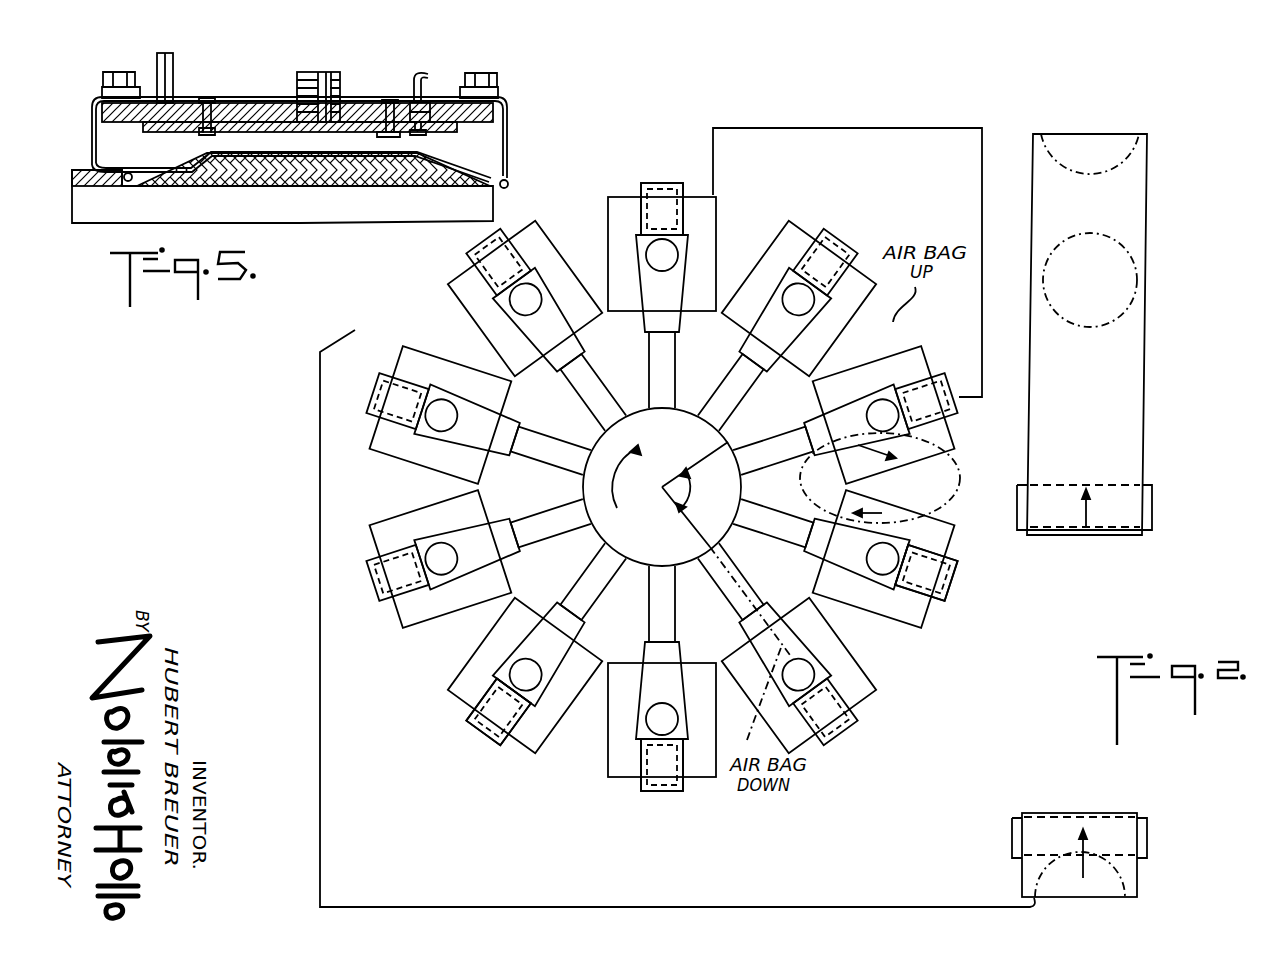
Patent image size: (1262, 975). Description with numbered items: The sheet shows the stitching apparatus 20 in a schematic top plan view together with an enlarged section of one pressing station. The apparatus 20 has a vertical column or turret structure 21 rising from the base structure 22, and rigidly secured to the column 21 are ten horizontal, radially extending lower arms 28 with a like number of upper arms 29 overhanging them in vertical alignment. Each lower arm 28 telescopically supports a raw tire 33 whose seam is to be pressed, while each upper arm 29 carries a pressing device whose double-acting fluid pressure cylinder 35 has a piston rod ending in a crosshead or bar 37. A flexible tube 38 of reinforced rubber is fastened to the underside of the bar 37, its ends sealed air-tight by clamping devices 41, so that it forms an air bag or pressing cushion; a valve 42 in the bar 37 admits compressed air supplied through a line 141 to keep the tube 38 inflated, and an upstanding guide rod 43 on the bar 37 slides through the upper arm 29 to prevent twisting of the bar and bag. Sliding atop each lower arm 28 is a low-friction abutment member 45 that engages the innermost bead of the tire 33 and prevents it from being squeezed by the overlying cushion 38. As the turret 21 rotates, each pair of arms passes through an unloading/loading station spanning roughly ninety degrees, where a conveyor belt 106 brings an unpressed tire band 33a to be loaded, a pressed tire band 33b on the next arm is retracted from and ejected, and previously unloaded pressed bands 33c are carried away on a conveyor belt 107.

In FIG. 2, the stitching apparatus 20 is at (692, 128).
In FIG. 2, the column or turret structure 21 is at (583, 478).
In FIG. 2, the base structure 22 is at (851, 137).
In FIG. 5, the lower arms 28 is at (322, 221).
In FIG. 2, the lower arms 28 is at (648, 206).
In FIG. 2, the upper arms 29 is at (571, 408).
In FIG. 5, the raw tires 33 is at (397, 188).
In FIG. 2, the raw tires 33 is at (790, 222).
In FIG. 2, the unpressed raw tire band 33a is at (1115, 880).
In FIG. 2, the pressed tire band on next arm 33b is at (948, 435).
In FIG. 2, the previously unloaded pressed tire bands 33c is at (1127, 175).
In FIG. 2, the double-acting fluid pressure cylinder 35 is at (792, 293).
In FIG. 5, the crosshead or bar 37 is at (242, 102).
In FIG. 2, the crosshead or bar 37 is at (667, 181).
In FIG. 2, the flexible tube 38 is at (667, 181).
In FIG. 5, the clamping devices 41 is at (100, 96).
In FIG. 5, the valve 42 is at (433, 103).
In FIG. 5, the guide rod 43 is at (174, 62).
In FIG. 5, the abutment member 45 is at (100, 187).
In FIG. 2, the conveyor belt 106 is at (1030, 812).
In FIG. 2, the conveyor belt 107 is at (1115, 518).
In FIG. 5, the lines 141 is at (418, 80).